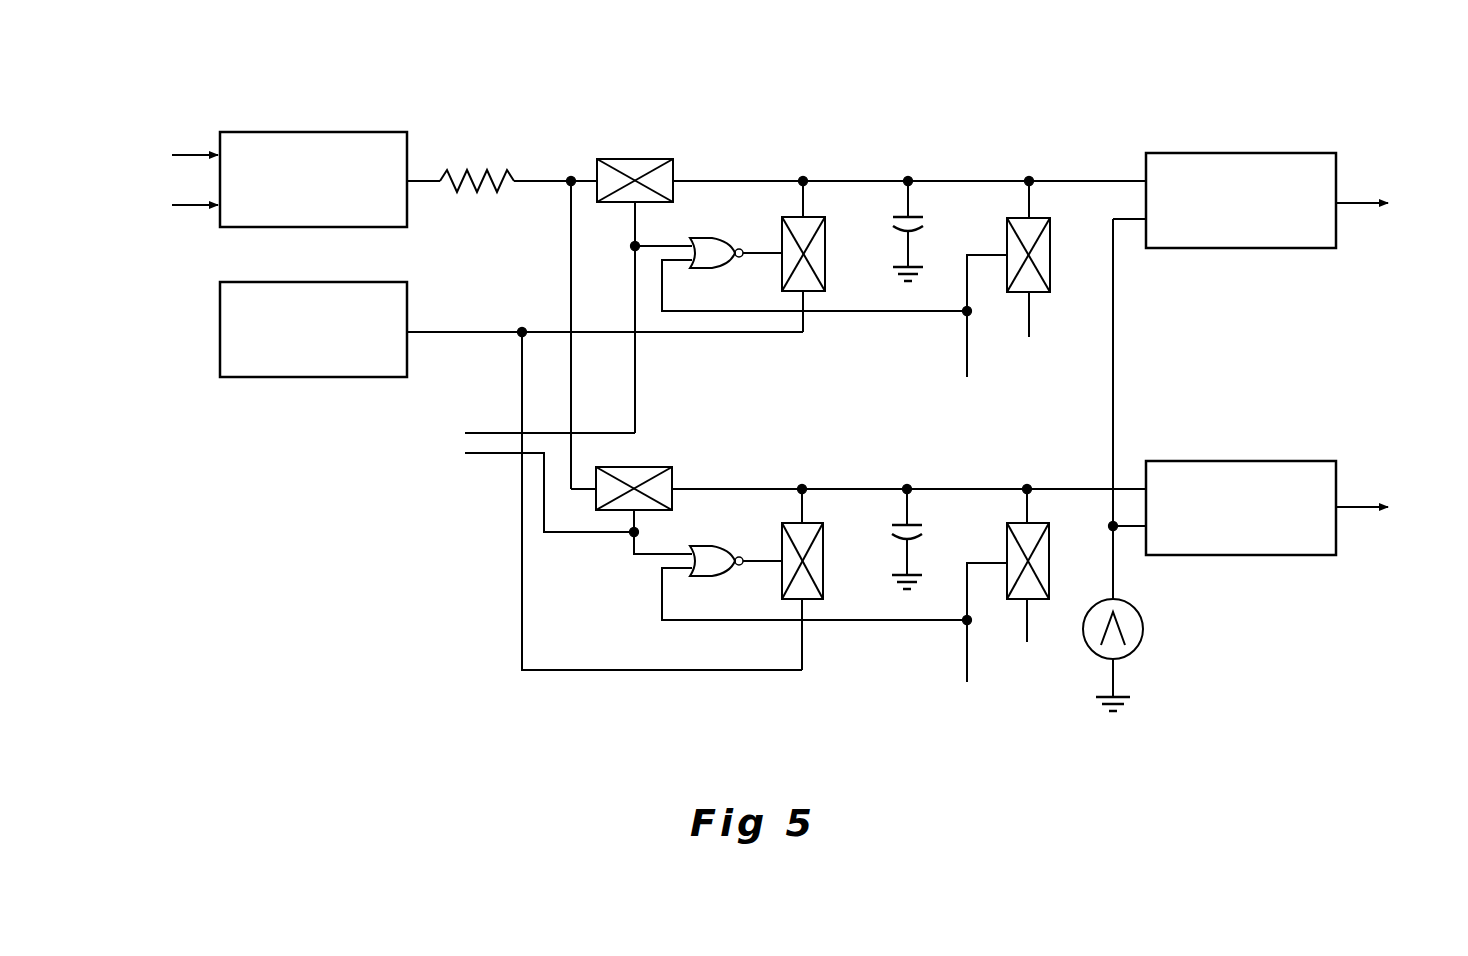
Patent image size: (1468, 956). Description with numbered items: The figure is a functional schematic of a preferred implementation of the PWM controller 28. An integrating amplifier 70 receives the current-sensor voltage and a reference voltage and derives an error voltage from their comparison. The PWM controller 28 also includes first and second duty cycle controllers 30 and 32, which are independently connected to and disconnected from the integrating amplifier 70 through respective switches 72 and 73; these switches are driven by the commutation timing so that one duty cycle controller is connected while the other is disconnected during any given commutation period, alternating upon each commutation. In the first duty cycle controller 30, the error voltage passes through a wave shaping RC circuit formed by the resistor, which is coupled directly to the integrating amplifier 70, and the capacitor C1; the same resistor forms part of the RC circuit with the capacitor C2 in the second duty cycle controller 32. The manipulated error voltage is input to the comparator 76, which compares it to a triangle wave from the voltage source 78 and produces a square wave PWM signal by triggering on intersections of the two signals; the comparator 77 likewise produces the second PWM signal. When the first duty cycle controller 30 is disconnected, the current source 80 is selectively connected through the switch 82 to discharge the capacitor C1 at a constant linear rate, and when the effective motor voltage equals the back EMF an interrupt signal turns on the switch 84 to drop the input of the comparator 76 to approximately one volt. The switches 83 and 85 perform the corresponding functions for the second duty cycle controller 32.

The PWM controller 28 is at (850, 64).
The first duty cycle controller 30 is at (780, 348).
The second duty cycle controller 32 is at (757, 705).
The integrating amplifier 70 is at (400, 207).
The switch 72 is at (637, 165).
The switch 73 is at (636, 473).
The comparator 76 is at (1271, 162).
The comparator 77 is at (1271, 470).
The voltage source 78 is at (1138, 642).
The current source 80 is at (400, 358).
The switch 82 is at (825, 248).
The switch 83 is at (823, 555).
The switch 84 is at (1050, 255).
The switch 85 is at (1049, 562).
The capacitor C1 is at (932, 231).
The capacitor C2 is at (932, 539).